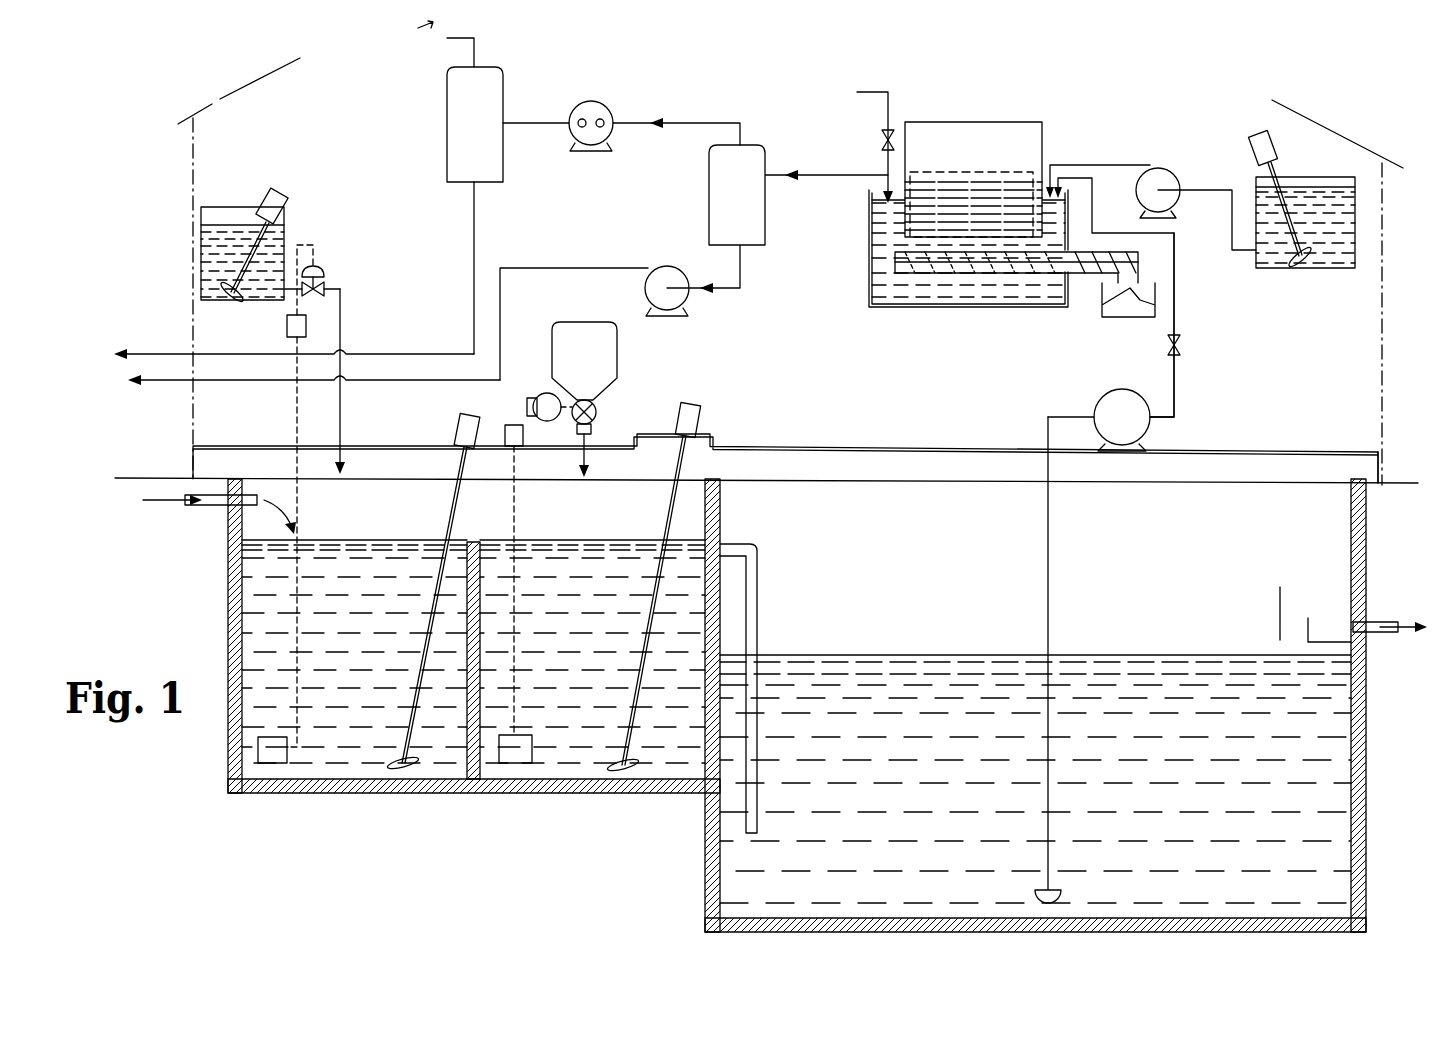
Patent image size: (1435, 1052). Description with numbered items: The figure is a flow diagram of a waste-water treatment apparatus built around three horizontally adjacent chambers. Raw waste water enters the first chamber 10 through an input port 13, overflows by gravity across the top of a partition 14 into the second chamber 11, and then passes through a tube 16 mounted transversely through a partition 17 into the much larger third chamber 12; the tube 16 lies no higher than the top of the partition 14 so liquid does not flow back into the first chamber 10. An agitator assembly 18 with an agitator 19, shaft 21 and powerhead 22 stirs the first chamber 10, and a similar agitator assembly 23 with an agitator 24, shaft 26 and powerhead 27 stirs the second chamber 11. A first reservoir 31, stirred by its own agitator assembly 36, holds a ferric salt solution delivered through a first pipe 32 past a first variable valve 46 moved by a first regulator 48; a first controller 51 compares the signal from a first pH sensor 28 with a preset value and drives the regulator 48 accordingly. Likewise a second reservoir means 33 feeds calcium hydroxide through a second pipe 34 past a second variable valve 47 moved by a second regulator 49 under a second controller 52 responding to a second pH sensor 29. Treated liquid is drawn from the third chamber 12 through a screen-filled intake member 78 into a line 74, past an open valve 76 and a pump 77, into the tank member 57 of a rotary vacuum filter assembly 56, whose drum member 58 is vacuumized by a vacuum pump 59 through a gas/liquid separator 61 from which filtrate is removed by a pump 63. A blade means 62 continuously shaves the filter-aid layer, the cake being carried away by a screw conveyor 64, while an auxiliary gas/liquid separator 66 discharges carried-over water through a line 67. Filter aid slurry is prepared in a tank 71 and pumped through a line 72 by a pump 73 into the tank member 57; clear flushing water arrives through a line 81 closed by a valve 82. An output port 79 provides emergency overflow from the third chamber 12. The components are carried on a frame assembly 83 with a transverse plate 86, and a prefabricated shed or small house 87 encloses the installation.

The first chamber 10 is at (362, 689).
The second chamber 11 is at (597, 689).
The third chamber 12 is at (952, 738).
The input port 13 is at (207, 508).
The partition 14 is at (470, 775).
The tube 16 is at (752, 545).
The partition 17 is at (708, 775).
The agitator assembly 18 is at (438, 530).
The agitator 19 is at (400, 770).
The shaft 21 is at (428, 640).
The powerhead 22 is at (455, 428).
The agitator assembly 23 is at (658, 534).
The agitator 24 is at (620, 770).
The shaft 26 is at (648, 640).
The powerhead 27 is at (702, 421).
The first pH sensor 28 is at (272, 763).
The second pH sensor 29 is at (515, 763).
The first reservoir 31 is at (200, 245).
The first pipe 32 is at (341, 330).
The second reservoir means 33 is at (610, 358).
The second pipe 34 is at (592, 440).
The agitator assembly 36 is at (258, 228).
The first variable valve 46 is at (327, 287).
The second variable valve 47 is at (597, 408).
The first regulator 48 is at (318, 266).
The second regulator 49 is at (541, 394).
The first controller 51 is at (287, 330).
The second controller 52 is at (510, 425).
The rotary vacuum filter assembly 56 is at (1066, 155).
The tank member 57 is at (869, 265).
The drum member 58 is at (935, 122).
The vacuum pump 59 is at (597, 105).
The gas/liquid separator 61 is at (765, 150).
The blade means 62 is at (1000, 172).
The pump 63 is at (663, 269).
The screw conveyor 64 is at (1086, 275).
The auxiliary gas/liquid separator 66 is at (494, 72).
The line 67 is at (475, 243).
The tank 71 is at (1330, 270).
The line 72 is at (1192, 186).
The pump 73 is at (1172, 201).
The line 74 is at (1048, 430).
The valve 76 is at (1184, 352).
The pump 77 is at (1122, 390).
The enlarged intake member 78 is at (1062, 890).
The output port 79 is at (1376, 621).
The line 81 is at (878, 92).
The valve 82 is at (880, 140).
The frame assembly 83 is at (1374, 472).
The plate 86 is at (1290, 450).
The shed or small house 87 is at (1386, 325).